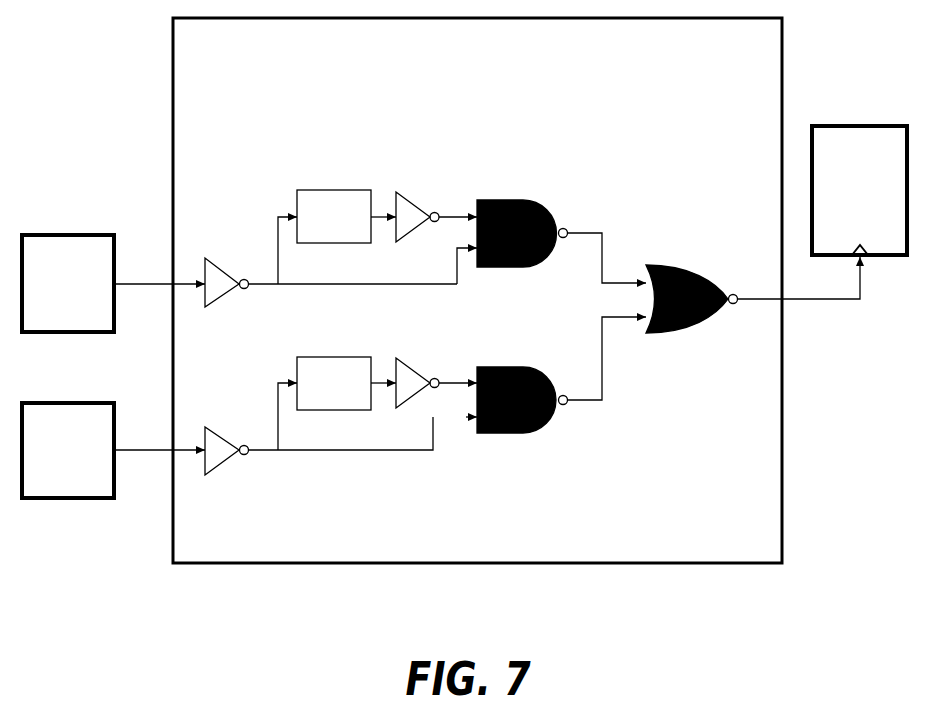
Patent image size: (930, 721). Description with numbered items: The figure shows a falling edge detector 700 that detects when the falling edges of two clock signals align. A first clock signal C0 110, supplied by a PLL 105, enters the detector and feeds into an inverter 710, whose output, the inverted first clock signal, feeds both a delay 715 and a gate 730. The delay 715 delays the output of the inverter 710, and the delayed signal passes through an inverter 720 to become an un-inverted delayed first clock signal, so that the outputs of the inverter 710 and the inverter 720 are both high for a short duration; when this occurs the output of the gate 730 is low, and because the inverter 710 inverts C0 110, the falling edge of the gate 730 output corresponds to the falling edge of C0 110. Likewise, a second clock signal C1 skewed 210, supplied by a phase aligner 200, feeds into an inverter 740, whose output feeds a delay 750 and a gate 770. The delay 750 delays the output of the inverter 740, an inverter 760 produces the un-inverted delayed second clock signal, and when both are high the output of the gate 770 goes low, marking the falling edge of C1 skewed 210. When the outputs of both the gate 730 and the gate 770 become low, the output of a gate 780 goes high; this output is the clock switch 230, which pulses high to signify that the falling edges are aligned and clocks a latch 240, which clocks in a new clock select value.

The falling edge detector 700 is at (477, 290).
The PLL 105 is at (68, 283).
The C0 110 is at (142, 229).
The phase aligner 200 is at (68, 450).
The C1 skewed 210 is at (115, 525).
The clock switch 230 is at (814, 353).
The latch 240 is at (859, 190).
The inverter 710 is at (259, 305).
The delay 715 is at (334, 216).
The inverter 720 is at (466, 189).
The gate 730 is at (549, 201).
The inverter 740 is at (260, 484).
The delay 750 is at (334, 383).
The inverter 760 is at (459, 359).
The gate 770 is at (531, 439).
The gate 780 is at (692, 338).